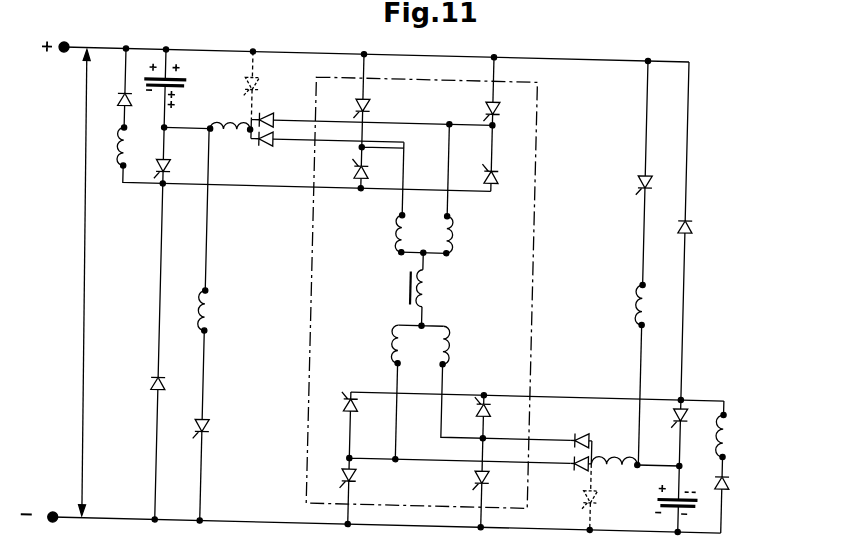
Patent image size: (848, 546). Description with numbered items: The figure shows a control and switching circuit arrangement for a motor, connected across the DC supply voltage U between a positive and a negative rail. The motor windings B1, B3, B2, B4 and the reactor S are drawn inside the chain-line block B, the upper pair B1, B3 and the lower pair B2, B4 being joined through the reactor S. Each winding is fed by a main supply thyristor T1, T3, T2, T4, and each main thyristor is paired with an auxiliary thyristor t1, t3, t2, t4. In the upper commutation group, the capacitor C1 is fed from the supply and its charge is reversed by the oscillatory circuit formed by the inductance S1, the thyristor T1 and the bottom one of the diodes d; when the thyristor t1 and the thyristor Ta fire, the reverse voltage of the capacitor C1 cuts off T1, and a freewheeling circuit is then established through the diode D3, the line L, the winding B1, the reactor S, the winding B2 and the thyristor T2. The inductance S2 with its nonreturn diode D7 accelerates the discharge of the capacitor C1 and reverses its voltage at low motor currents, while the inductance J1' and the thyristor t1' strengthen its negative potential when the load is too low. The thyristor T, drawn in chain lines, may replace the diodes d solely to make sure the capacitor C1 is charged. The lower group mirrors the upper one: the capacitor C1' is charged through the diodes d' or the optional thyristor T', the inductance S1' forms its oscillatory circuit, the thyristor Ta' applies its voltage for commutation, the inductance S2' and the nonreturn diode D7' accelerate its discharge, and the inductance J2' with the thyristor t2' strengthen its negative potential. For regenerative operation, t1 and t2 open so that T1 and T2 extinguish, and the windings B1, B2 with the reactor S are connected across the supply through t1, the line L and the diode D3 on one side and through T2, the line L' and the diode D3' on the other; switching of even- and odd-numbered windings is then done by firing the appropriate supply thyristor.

The supply voltage U is at (74, 282).
The nonreturn diode D7 is at (113, 86).
The inductance S2 is at (128, 153).
The capacitor C1 is at (182, 88).
The thyristor Ta is at (176, 168).
The diode D3 is at (139, 449).
The inductance S1 is at (230, 114).
The inductance J1' is at (188, 274).
The thyristor t1' is at (219, 468).
The thyristor T is at (260, 84).
The diodes d is at (372, 122).
The line L is at (326, 202).
The thyristor T1 is at (373, 100).
The thyristor t1 is at (347, 174).
The thyristor T3 is at (500, 101).
The thyristor t3 is at (501, 169).
The winding B1 is at (399, 222).
The winding B3 is at (458, 222).
The reactor S is at (410, 283).
The winding B2 is at (398, 338).
The winding B4 is at (457, 335).
The winding block B is at (308, 307).
The thyristor t2 is at (338, 406).
The thyristor T2 is at (352, 470).
The thyristor t4 is at (500, 409).
The thyristor T4 is at (500, 473).
The line L' is at (538, 381).
The diodes d' is at (568, 443).
The thyristor T' is at (571, 498).
The inductance S1' is at (616, 442).
The thyristor t2' is at (630, 172).
The inductance J2' is at (620, 373).
The diode D3' is at (706, 233).
The thyristor Ta' is at (664, 432).
The capacitor C1' is at (651, 499).
The inductance S2' is at (735, 439).
The nonreturn diode D7' is at (736, 505).